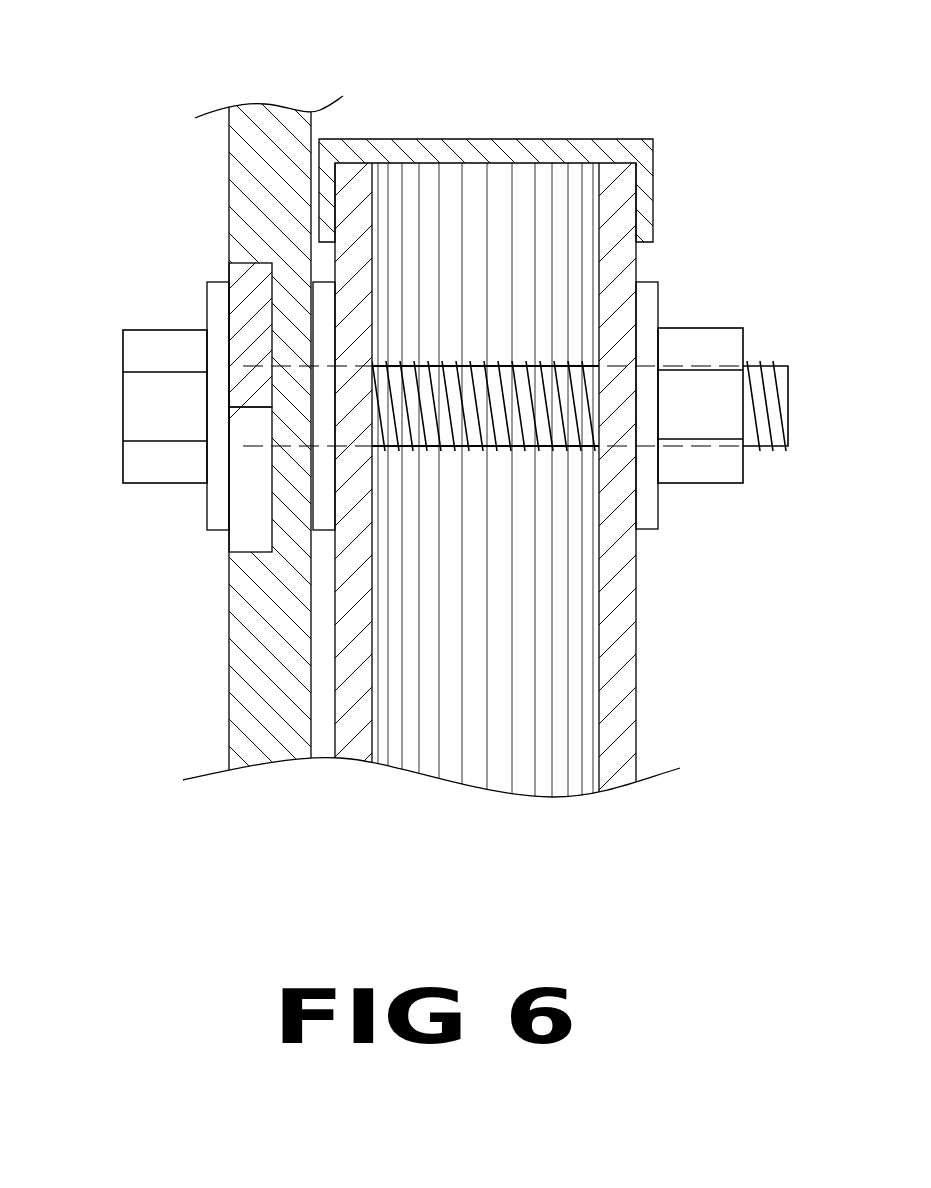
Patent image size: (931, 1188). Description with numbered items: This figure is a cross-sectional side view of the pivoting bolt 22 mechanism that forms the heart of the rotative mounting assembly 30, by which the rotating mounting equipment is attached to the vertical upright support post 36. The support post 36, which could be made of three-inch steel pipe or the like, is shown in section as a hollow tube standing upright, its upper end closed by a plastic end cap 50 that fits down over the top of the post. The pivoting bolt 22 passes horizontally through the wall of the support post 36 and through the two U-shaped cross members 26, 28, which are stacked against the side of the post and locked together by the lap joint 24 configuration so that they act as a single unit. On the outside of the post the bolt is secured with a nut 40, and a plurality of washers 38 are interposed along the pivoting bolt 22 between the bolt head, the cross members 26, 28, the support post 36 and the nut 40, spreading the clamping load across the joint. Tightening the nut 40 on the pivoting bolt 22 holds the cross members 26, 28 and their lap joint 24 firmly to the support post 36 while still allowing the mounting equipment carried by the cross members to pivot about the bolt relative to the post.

The pivoting bolt 22 is at (147, 330).
The lap joint 24 is at (258, 553).
The U-shaped cross member 26 is at (247, 530).
The U-shaped cross member 28 is at (228, 580).
The rotative mounting assembly 30 is at (318, 306).
The support post 36 is at (636, 657).
The washer 38 is at (655, 282).
The nut 40 is at (742, 328).
The plastic end cap 50 is at (515, 139).